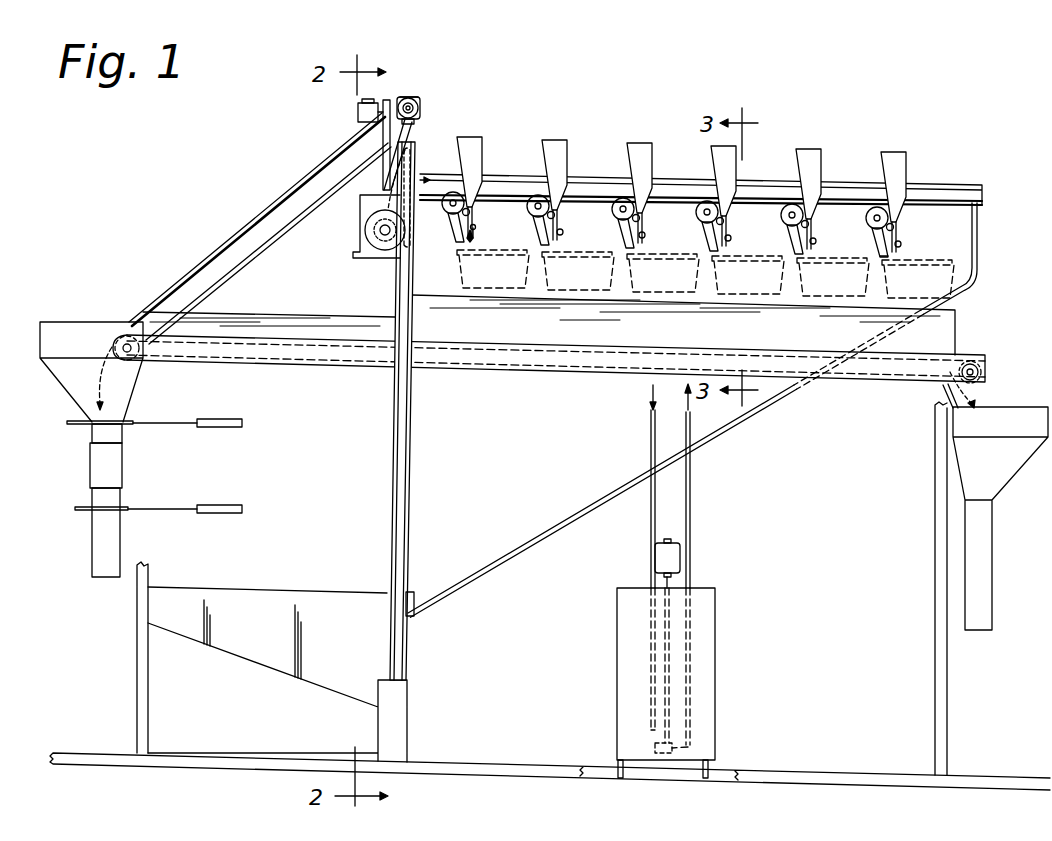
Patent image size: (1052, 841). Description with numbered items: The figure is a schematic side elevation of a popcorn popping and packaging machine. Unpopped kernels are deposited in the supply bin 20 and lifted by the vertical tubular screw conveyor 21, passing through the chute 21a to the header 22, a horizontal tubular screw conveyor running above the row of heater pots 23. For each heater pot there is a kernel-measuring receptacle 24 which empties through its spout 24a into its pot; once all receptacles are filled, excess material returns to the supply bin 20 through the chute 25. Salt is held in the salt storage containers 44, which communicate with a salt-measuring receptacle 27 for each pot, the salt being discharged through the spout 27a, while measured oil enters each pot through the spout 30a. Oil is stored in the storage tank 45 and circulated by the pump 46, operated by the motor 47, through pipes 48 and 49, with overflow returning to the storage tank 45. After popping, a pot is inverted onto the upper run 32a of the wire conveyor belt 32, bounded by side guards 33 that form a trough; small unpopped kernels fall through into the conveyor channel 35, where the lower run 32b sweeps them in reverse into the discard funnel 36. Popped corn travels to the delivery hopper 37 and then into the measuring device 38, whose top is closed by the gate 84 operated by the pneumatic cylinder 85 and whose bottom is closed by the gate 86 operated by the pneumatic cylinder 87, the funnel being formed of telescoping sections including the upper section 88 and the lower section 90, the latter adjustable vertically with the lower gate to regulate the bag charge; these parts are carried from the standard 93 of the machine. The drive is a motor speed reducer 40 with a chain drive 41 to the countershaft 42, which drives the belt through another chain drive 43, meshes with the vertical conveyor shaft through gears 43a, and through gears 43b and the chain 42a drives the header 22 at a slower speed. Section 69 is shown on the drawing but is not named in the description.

The supply bin 20 is at (296, 592).
The vertical tubular screw conveyor 21 is at (393, 433).
The chute 21a is at (415, 170).
The header 22 is at (925, 188).
The heater pots 23 is at (632, 286).
The kernel-measuring receptacle 24 is at (448, 214).
The spout 24a is at (889, 256).
The chute 25 is at (958, 282).
The salt-measuring receptacle 27 is at (470, 212).
The spout 27a is at (727, 224).
The spout 30a is at (645, 233).
The wire conveyor belt 32 is at (528, 374).
The upper run 32a is at (880, 354).
The lower run 32b is at (894, 386).
The side guards 33 is at (375, 328).
The conveyor channel 35 is at (985, 361).
The discard funnel 36 is at (1005, 408).
The delivery hopper 37 is at (67, 331).
The measuring device 38 is at (136, 482).
The motor speed reducer 40 is at (365, 239).
The chain drive 41 is at (378, 201).
The countershaft 42 is at (419, 108).
The chain 42a is at (385, 132).
The chain drive 43 is at (291, 189).
The gears 43a is at (416, 130).
The gears 43b is at (404, 97).
The salt storage containers 44 is at (631, 153).
The storage tank 45 is at (716, 650).
The pump 46 is at (655, 749).
The motor 47 is at (681, 556).
The pipe 48 is at (691, 488).
The pipe 49 is at (650, 521).
The tube section 69 is at (122, 472).
The gate 84 is at (70, 421).
The pneumatic cylinder 85 is at (222, 419).
The gate 86 is at (78, 511).
The pneumatic cylinder 87 is at (220, 515).
The funnel section 88 is at (123, 437).
The funnel section 90 is at (118, 527).
The standard 93 is at (141, 656).